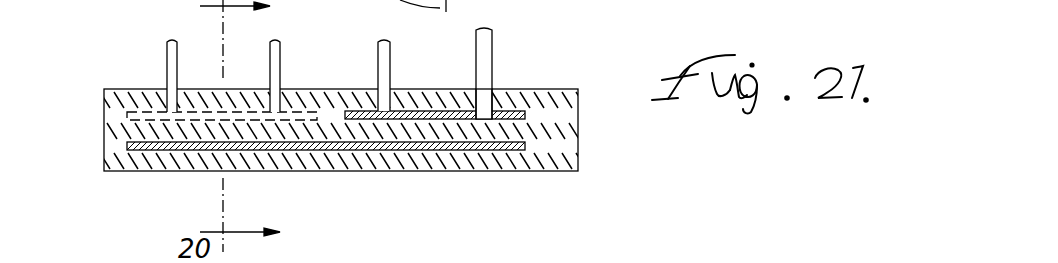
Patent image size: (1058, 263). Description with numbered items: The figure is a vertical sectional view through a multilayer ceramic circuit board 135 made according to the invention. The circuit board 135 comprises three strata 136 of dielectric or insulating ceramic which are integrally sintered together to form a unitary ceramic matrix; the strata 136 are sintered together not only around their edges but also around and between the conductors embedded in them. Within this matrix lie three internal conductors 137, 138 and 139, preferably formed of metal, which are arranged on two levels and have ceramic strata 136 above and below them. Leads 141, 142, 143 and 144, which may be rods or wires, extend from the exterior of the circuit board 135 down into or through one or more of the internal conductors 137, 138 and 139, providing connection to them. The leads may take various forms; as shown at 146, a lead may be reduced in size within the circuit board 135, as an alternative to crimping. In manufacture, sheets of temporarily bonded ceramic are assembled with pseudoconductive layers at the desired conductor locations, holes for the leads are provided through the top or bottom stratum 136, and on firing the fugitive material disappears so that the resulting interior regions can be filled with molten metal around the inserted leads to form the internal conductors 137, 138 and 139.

The circuit board 135 is at (588, 177).
The strata 136 is at (355, 130).
The internal conductor 137 is at (397, 150).
The internal conductor 138 is at (141, 112).
The internal conductor 139 is at (578, 117).
The lead 141 is at (493, 36).
The lead 142 is at (416, 47).
The lead 143 is at (281, 51).
The lead 144 is at (167, 52).
The reduced-size lead portion 146 is at (492, 98).